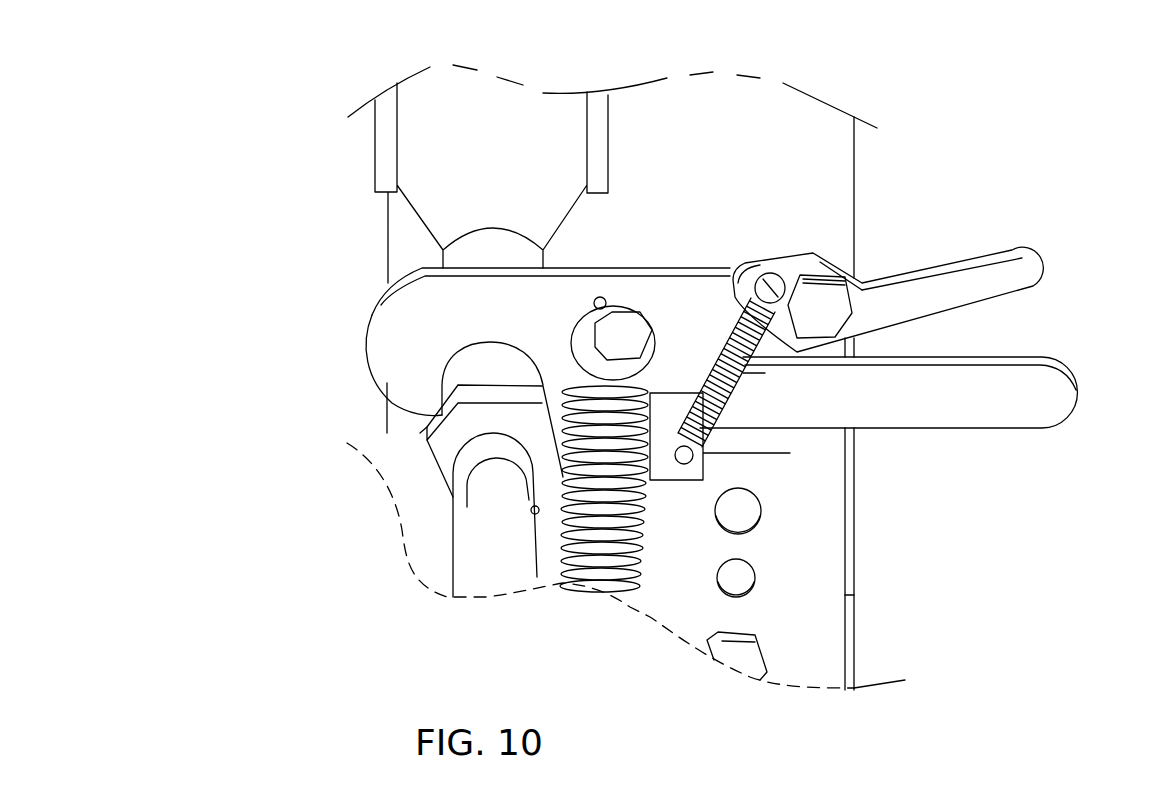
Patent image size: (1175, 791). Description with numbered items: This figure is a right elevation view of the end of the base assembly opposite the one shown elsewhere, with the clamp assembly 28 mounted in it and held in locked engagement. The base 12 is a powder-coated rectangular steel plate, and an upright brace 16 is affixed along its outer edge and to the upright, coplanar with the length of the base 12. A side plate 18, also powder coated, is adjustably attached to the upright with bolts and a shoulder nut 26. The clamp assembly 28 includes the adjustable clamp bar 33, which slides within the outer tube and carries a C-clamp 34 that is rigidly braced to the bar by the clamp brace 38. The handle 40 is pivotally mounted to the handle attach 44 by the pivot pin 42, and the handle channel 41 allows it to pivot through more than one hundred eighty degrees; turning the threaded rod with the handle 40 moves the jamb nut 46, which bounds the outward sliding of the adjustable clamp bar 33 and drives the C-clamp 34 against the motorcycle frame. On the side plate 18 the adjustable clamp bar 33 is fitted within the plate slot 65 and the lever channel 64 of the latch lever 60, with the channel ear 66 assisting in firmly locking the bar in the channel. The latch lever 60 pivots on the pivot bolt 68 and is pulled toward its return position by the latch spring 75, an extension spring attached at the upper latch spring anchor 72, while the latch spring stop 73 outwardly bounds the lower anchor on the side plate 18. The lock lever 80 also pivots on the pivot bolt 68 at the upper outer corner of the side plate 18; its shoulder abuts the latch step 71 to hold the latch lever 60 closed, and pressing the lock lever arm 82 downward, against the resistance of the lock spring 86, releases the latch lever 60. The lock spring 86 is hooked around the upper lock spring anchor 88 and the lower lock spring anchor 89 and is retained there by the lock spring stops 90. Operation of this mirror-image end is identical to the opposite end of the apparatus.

The base 12 is at (853, 570).
The upright brace 16 is at (853, 647).
The side plate 18 is at (830, 522).
The shoulder nut 26 is at (805, 270).
The clamp assembly 28 is at (1025, 322).
The adjustable clamp bar 33 is at (427, 383).
The C-clamp 34 is at (610, 125).
The clamp brace 38 is at (410, 163).
The handle 40 is at (457, 513).
The handle channel 41 is at (517, 478).
The pivot pin 42 is at (537, 535).
The handle attach 44 is at (430, 450).
The jamb nut 46 is at (428, 433).
The latch lever 60 is at (388, 282).
The lever channel 64 is at (464, 343).
The plate slot 65 is at (423, 368).
The channel ear 66 is at (427, 405).
The pivot bolt 68 is at (828, 280).
The latch step 71 is at (730, 287).
The upper latch spring anchor 72 is at (605, 297).
The latch spring stop 73 is at (630, 327).
The latch spring 75 is at (602, 377).
The lock lever 80 is at (870, 268).
The lock lever arm 82 is at (1023, 264).
The lock spring 86 is at (765, 373).
The upper lock spring anchor 88 is at (770, 250).
The lower lock spring anchor 89 is at (828, 502).
The lock spring stop 90 is at (763, 283).